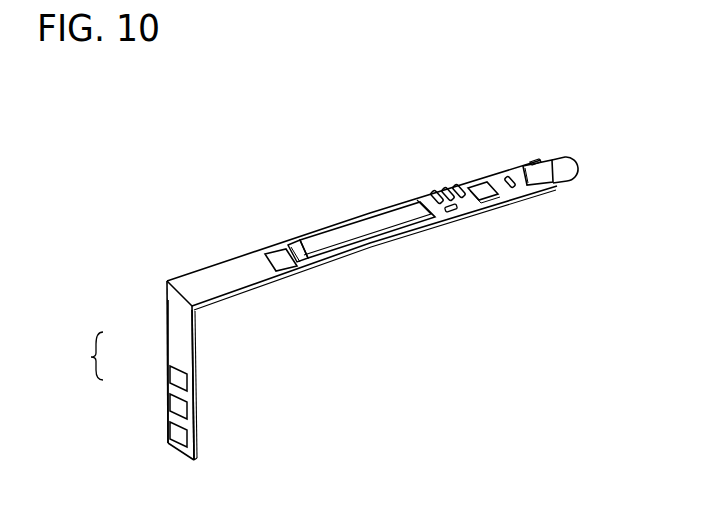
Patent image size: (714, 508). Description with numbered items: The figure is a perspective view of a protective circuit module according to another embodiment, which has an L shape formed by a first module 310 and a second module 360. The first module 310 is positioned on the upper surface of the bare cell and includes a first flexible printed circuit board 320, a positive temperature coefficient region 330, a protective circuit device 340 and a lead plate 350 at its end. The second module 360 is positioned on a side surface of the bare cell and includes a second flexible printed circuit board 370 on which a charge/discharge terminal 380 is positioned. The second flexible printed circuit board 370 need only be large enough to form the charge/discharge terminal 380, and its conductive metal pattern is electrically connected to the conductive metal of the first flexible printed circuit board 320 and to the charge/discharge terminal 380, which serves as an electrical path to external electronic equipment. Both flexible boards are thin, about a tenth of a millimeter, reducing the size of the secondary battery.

The first module 310 is at (248, 252).
The first flexible printed circuit board 320 is at (254, 272).
The positive temperature coefficient (PTC) region 330 is at (367, 225).
The protective circuit device 340 is at (508, 177).
The lead plate 350 is at (568, 160).
The second module 360 is at (78, 356).
The second flexible printed circuit board 370 is at (182, 335).
The charge/discharge terminal 380 is at (183, 385).